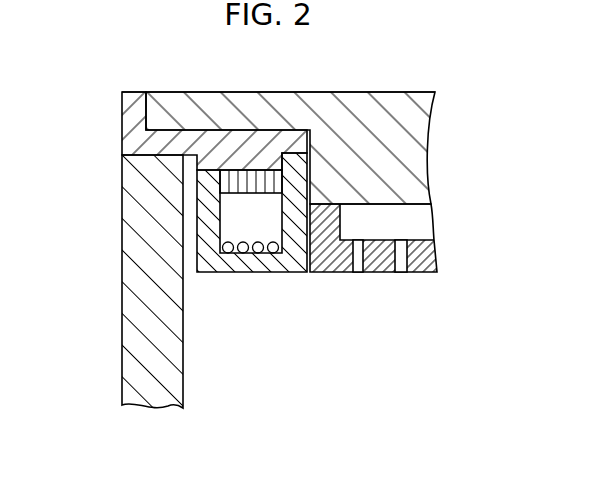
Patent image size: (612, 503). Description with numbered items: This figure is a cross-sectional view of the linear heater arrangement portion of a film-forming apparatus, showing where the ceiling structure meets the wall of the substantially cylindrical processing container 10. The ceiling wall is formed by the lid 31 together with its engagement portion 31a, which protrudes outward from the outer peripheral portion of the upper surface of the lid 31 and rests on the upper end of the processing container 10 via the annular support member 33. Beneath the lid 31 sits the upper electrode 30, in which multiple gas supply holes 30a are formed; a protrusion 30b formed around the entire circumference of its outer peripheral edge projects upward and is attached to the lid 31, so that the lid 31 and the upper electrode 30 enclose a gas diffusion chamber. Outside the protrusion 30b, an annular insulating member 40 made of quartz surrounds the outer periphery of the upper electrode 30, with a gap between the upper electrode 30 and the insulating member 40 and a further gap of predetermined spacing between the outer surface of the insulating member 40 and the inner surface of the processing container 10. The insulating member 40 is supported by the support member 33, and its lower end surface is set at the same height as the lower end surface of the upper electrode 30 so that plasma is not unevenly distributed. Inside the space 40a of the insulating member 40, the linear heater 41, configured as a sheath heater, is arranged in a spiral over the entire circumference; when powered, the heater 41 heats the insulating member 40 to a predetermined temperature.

The processing container 10 is at (126, 303).
The upper electrode 30 is at (433, 250).
The gas supply holes 30a is at (398, 273).
The protrusion 30b is at (329, 208).
The lid 31 is at (427, 155).
The engagement portion 31a is at (167, 92).
The support member 33 is at (125, 137).
The insulating member 40 is at (288, 273).
The space 40a is at (235, 216).
The linear heater 41 is at (245, 254).